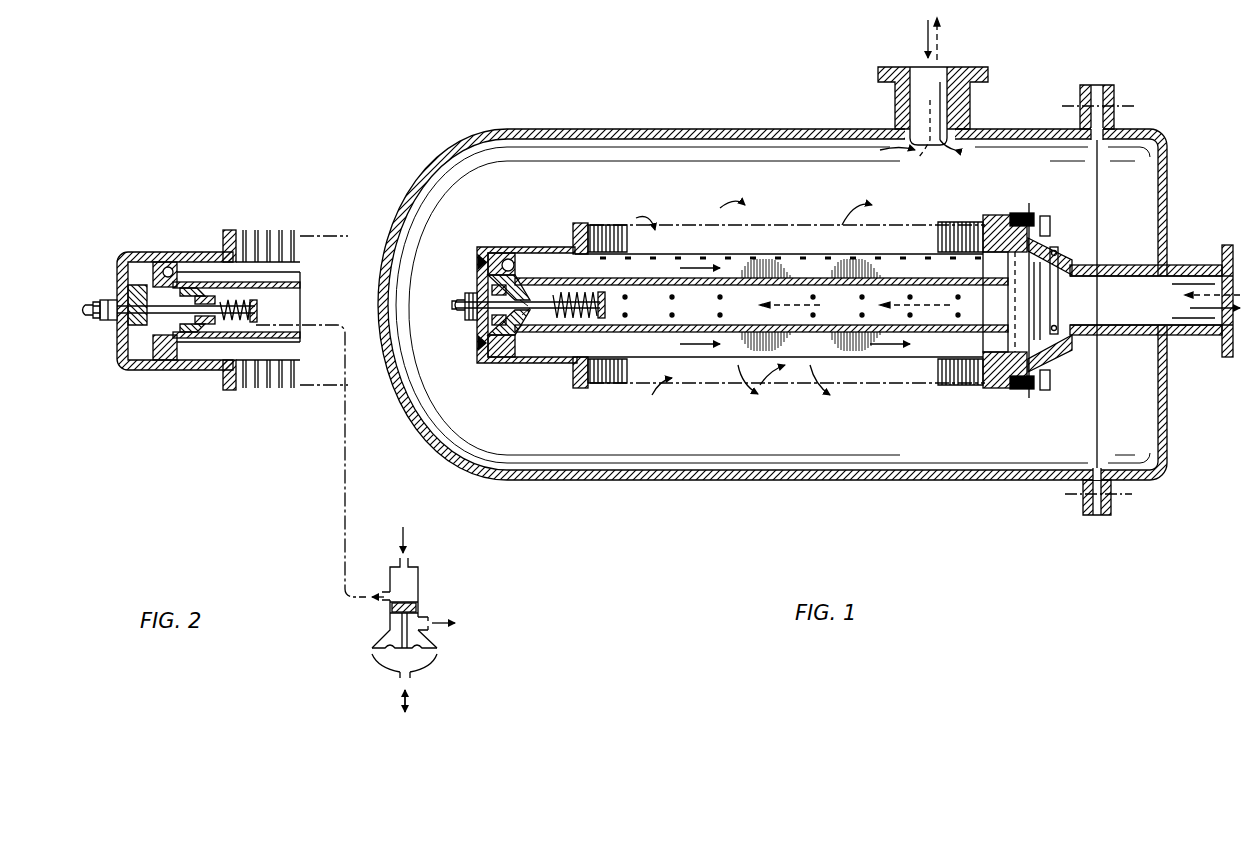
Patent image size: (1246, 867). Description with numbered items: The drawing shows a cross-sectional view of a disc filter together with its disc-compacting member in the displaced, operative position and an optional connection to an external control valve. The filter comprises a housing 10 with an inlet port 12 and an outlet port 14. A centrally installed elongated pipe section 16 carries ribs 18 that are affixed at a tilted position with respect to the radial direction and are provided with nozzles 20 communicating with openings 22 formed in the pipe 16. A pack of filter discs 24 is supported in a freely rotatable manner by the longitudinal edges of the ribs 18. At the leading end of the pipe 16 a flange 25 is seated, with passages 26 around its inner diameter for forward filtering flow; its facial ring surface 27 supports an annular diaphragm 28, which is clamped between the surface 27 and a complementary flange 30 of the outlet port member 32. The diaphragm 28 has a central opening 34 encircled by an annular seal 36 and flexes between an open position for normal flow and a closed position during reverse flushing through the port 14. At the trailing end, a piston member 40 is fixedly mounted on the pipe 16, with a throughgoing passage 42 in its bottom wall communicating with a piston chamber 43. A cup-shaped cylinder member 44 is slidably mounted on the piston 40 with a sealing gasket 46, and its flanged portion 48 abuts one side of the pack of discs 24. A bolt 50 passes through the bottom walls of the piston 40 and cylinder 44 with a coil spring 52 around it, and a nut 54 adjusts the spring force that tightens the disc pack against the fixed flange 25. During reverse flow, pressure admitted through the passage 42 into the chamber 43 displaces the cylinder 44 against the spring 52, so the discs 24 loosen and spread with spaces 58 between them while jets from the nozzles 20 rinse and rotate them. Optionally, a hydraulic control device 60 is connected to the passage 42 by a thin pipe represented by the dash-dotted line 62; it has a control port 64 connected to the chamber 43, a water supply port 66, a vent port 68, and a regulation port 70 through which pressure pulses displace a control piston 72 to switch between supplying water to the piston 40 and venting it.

In FIG. 1, the housing 10 is at (668, 129).
In FIG. 1, the inlet port 12 is at (935, 72).
In FIG. 1, the outlet port 14 is at (1225, 312).
In FIG. 1, the elongated pipe section 16 is at (790, 286).
In FIG. 1, the ribs 18 is at (660, 268).
In FIG. 1, the nozzles 20 is at (748, 255).
In FIG. 1, the openings 22 is at (818, 316).
In FIG. 1, the pack of filter discs 24 is at (612, 228).
In FIG. 2, the pack of filter discs 24 is at (258, 232).
In FIG. 1, the flange 25 is at (988, 218).
In FIG. 1, the passages 26 is at (992, 275).
In FIG. 1, the facial ring surface 27 is at (1020, 213).
In FIG. 1, the annular diaphragm 28 is at (1029, 205).
In FIG. 1, the complementary flange 30 is at (1046, 216).
In FIG. 1, the outlet port member 32 is at (1045, 256).
In FIG. 1, the central opening 34 is at (1058, 338).
In FIG. 1, the annular seal 36 is at (1056, 330).
In FIG. 1, the piston member 40 is at (508, 253).
In FIG. 2, the piston member 40 is at (178, 262).
In FIG. 1, the throughgoing passage 42 is at (522, 340).
In FIG. 2, the throughgoing passage 42 is at (194, 345).
In FIG. 1, the piston chamber 43 is at (514, 363).
In FIG. 2, the piston chamber 43 is at (150, 370).
In FIG. 1, the cup-shaped cylinder member 44 is at (492, 363).
In FIG. 2, the cup-shaped cylinder member 44 is at (128, 255).
In FIG. 1, the sealing gasket 46 is at (482, 252).
In FIG. 1, the flanged portion 48 is at (578, 222).
In FIG. 2, the flanged portion 48 is at (222, 230).
In FIG. 1, the bolt 50 is at (455, 302).
In FIG. 2, the bolt 50 is at (100, 320).
In FIG. 1, the coil spring 52 is at (576, 320).
In FIG. 2, the coil spring 52 is at (242, 345).
In FIG. 1, the nut 54 is at (462, 320).
In FIG. 2, the spaces 58 is at (270, 388).
In FIG. 2, the hydraulic control device 60 is at (470, 604).
In FIG. 2, the dash-dotted line 62 is at (344, 505).
In FIG. 2, the control port 64 is at (380, 602).
In FIG. 2, the water supply port 66 is at (406, 564).
In FIG. 2, the vent port 68 is at (445, 628).
In FIG. 2, the regulation port 70 is at (400, 680).
In FIG. 2, the piston 72 is at (418, 608).